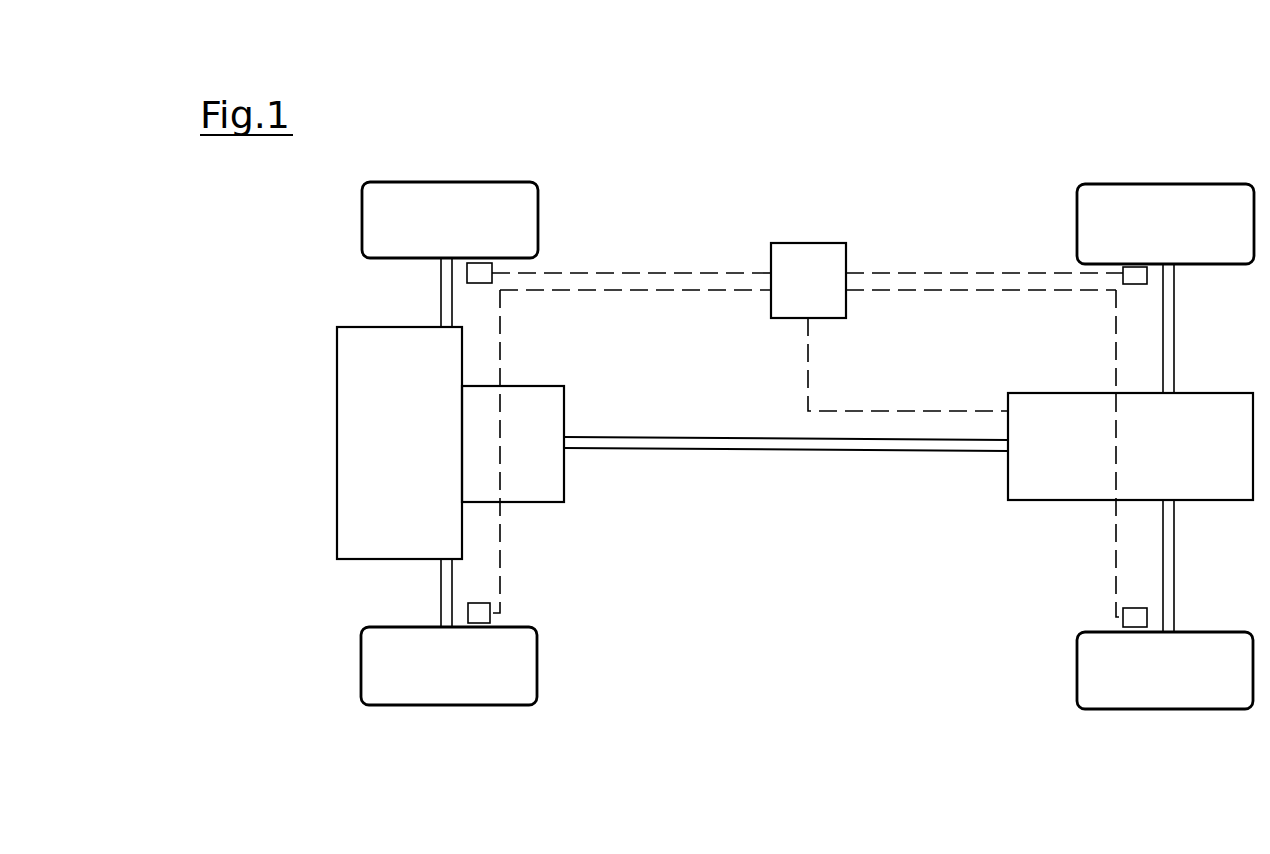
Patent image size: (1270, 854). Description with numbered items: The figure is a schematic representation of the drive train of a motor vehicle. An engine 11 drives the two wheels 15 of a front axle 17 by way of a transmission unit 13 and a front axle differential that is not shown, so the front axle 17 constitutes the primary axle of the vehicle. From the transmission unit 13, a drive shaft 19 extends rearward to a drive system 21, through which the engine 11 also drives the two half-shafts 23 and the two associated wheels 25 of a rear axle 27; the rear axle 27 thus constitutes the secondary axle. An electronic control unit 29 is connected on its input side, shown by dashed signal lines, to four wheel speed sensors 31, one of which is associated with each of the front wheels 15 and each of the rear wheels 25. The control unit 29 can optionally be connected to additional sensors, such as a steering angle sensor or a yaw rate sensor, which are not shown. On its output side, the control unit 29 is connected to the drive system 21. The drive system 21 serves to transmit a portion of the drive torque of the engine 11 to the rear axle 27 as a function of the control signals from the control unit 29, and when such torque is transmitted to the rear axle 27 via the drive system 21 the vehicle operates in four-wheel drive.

The engine 11 is at (407, 457).
The transmission unit 13 is at (545, 457).
The wheels 15 is at (446, 197).
The front axle 17 is at (438, 591).
The drive shaft 19 is at (652, 445).
The drive system 21 is at (1195, 454).
The half-shafts 23 is at (1216, 448).
The wheels 25 is at (1131, 202).
The rear axle 27 is at (1178, 571).
The electronic control unit 29 is at (823, 288).
The wheel speed sensors 31 is at (470, 271).